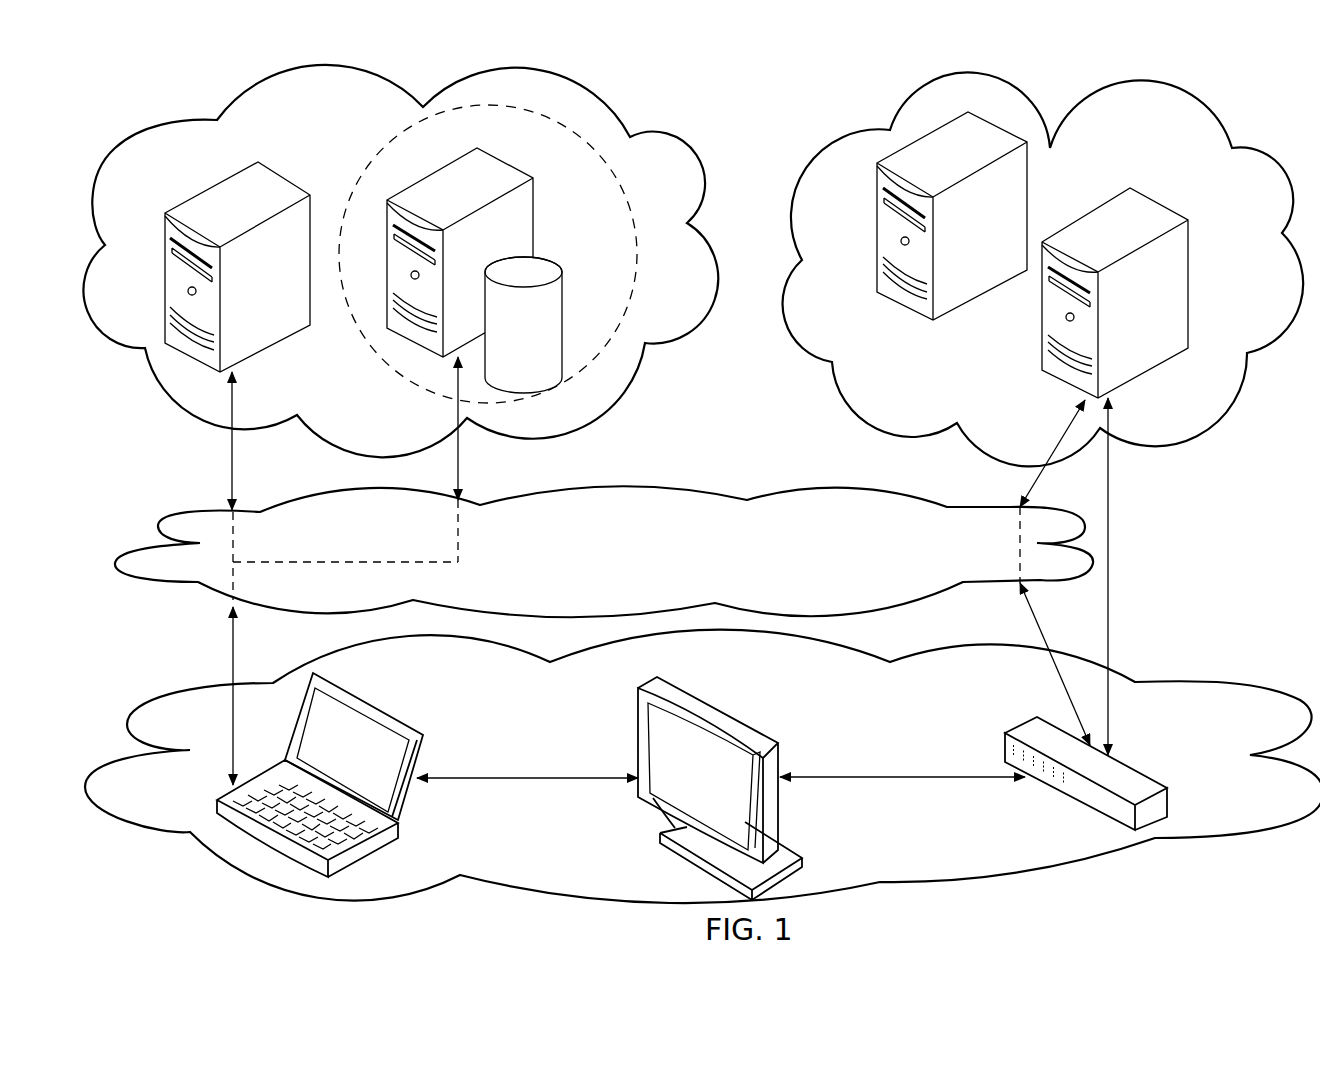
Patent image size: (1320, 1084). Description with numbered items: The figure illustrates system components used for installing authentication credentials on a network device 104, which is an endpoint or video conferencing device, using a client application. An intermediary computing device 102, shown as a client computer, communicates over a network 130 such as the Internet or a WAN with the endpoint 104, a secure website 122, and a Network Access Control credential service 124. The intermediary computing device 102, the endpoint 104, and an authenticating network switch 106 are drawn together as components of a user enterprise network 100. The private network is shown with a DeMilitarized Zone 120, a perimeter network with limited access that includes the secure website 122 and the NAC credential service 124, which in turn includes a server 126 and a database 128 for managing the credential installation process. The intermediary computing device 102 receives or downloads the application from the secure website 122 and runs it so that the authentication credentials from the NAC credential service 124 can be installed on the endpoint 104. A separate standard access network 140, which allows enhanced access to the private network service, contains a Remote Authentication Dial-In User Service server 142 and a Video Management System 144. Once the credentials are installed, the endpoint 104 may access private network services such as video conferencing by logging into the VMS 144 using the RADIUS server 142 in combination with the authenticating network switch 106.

The user enterprise network 100 is at (1192, 677).
The intermediary computing device 102 is at (217, 805).
The network device 104 is at (637, 695).
The authenticating network switch 106 is at (1003, 741).
The DeMilitarized Zone 120 is at (603, 414).
The secure website 122 is at (288, 180).
The Network Access Control (NAC) credential service 124 is at (380, 356).
The server 126 is at (510, 166).
The database 128 is at (547, 258).
The network 130 is at (747, 500).
The standard access network 140 is at (857, 130).
The Remote Authentication Dial-In User Service (RADIUS) server 142 is at (1190, 262).
The Video Management System (VMS) 144 is at (1032, 150).